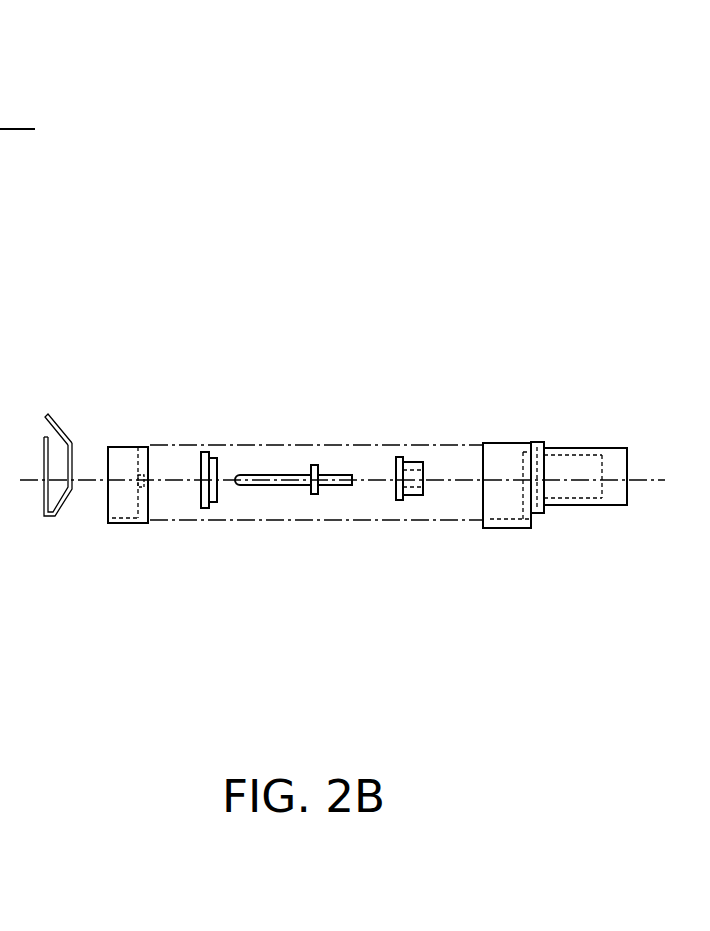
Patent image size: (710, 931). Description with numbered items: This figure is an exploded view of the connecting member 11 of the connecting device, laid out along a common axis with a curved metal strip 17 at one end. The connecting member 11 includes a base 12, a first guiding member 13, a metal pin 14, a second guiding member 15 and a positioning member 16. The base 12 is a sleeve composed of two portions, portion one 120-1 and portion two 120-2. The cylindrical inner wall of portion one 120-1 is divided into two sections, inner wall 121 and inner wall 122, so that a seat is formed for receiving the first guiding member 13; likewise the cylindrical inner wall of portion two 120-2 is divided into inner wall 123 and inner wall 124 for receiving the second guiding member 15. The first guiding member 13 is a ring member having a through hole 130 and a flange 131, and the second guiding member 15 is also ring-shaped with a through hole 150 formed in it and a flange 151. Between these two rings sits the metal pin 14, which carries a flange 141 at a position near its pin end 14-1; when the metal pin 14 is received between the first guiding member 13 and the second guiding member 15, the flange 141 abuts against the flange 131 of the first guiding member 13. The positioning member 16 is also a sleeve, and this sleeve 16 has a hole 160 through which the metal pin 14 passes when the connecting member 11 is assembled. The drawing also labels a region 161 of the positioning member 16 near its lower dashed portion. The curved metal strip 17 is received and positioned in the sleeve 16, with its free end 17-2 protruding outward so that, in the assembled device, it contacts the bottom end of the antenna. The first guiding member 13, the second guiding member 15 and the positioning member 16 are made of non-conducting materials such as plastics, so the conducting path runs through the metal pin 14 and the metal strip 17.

The connecting member 11 is at (387, 232).
The base 12 is at (582, 438).
The portion one 120-1 is at (598, 452).
The portion two 120-2 is at (523, 455).
The inner wall 121 is at (607, 496).
The inner wall 122 is at (590, 495).
The inner wall 123 is at (526, 505).
The inner wall 124 is at (498, 520).
The first guiding member 13 is at (419, 454).
The through hole 130 is at (398, 479).
The flange 131 is at (400, 458).
The metal pin 14 is at (269, 455).
The pin end 14-1 is at (352, 487).
The flange 141 is at (315, 496).
The second guiding member 15 is at (215, 446).
The through hole 150 is at (203, 479).
The flange 151 is at (210, 454).
The positioning member 16 is at (128, 438).
The hole 160 is at (147, 470).
The holder block bottom portion 161 is at (125, 513).
The curved metal strip 17 is at (46, 412).
The free end 17-2 is at (65, 437).